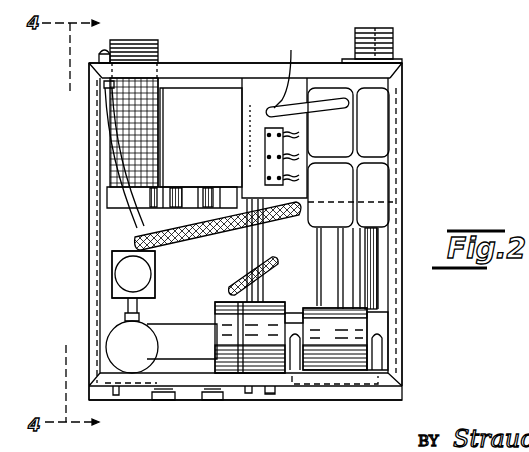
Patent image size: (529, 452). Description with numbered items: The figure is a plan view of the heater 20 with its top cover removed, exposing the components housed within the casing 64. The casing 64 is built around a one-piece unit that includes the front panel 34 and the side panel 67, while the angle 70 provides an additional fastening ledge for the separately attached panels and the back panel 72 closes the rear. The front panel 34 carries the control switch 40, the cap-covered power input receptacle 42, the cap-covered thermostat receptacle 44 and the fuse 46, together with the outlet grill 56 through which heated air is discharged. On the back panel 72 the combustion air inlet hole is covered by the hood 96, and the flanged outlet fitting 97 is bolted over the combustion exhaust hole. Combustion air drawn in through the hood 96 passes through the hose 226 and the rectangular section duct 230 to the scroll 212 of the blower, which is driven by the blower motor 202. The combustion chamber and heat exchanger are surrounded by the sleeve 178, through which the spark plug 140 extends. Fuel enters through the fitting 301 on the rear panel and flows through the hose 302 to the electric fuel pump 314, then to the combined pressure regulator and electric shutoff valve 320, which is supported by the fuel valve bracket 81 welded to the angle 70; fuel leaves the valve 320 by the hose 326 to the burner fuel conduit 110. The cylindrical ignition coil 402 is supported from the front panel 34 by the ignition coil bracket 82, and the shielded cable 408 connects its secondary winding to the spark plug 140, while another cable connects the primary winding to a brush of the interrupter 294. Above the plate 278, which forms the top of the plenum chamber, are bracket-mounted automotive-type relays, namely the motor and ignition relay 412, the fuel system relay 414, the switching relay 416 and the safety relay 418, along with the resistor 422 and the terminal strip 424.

The heater 20 is at (457, 179).
The front panel 34 is at (137, 386).
The control switch 40 is at (117, 388).
The D.C. power input receptacle 42 is at (173, 390).
The thermostat receptacle 44 is at (220, 393).
The fuse 46 is at (268, 393).
The outlet grill 56 is at (353, 389).
The casing 64 is at (404, 82).
The side panel 67 is at (403, 158).
The angle 70 is at (96, 313).
The back panel 72 is at (233, 63).
The fuel valve bracket 81 is at (103, 259).
The ignition coil bracket 82 is at (385, 358).
The hood 96 is at (158, 45).
The flanged outlet fitting 97 is at (393, 42).
The burner fuel conduit 110 is at (278, 250).
The spark plug 140 is at (277, 260).
The sleeve 178 is at (367, 270).
The blower motor 202 is at (208, 290).
The scroll 212 is at (198, 150).
The hose 226 is at (158, 115).
The rectangular section duct 230 is at (217, 193).
The plate 278 is at (294, 101).
The interrupter 294 is at (192, 355).
The fitting 301 is at (107, 46).
The hose 302 is at (115, 145).
The electric fuel pump 314 is at (140, 336).
The combined pressure regulator and electric shutoff valve 320 is at (116, 290).
The hose 326 is at (162, 236).
The ignition coil 402 is at (303, 310).
The shielded cable 408 is at (255, 326).
The motor and ignition relay 412 is at (384, 145).
The fuel system relay 414 is at (384, 198).
The switching relay 416 is at (338, 145).
The safety relay 418 is at (338, 198).
The resistor 422 is at (297, 70).
The terminal strip 424 is at (266, 148).